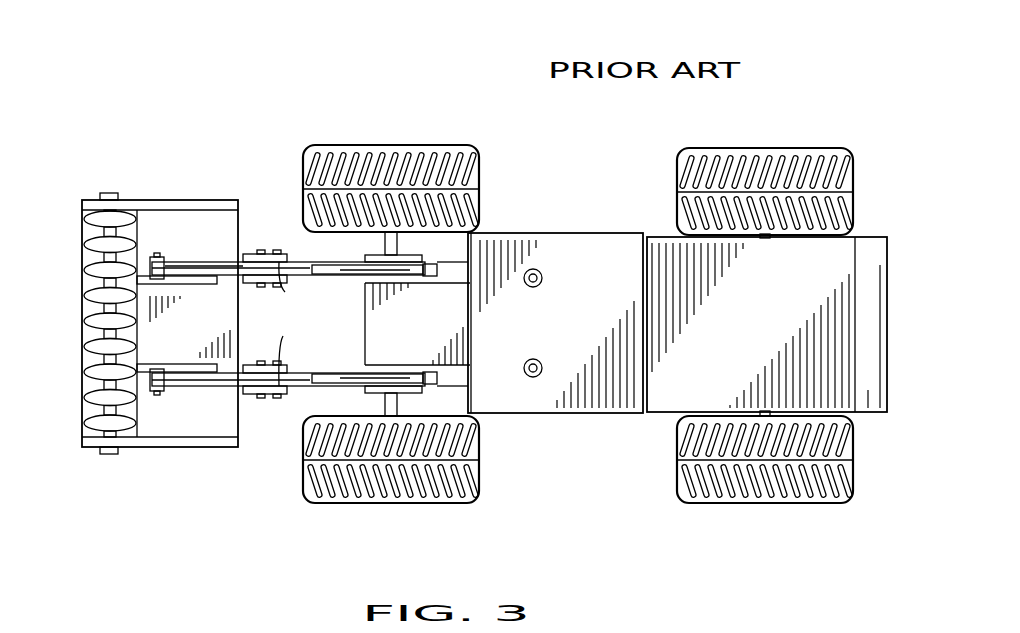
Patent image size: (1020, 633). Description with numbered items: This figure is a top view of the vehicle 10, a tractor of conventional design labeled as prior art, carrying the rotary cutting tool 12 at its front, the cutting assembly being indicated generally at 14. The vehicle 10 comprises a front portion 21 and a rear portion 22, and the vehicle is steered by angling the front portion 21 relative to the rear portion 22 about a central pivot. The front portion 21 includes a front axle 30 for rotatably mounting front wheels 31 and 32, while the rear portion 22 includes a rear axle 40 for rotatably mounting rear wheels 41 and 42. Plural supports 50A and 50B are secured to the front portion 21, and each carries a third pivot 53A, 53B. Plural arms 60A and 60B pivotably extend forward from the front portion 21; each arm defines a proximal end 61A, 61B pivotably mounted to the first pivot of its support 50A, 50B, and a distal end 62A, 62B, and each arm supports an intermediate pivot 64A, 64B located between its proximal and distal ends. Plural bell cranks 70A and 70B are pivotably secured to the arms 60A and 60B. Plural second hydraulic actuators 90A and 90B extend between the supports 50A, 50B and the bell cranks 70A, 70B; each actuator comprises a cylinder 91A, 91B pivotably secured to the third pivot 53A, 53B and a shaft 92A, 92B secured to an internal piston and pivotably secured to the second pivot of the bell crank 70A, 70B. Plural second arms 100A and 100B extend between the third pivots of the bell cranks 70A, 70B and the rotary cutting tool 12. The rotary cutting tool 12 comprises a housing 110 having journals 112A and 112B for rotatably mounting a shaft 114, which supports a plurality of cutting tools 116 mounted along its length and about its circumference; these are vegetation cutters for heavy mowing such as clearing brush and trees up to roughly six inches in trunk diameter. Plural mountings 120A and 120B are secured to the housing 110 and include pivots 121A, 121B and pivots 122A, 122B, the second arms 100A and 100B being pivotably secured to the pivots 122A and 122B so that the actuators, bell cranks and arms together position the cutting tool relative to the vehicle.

The vehicle 10 is at (824, 114).
The rotary cutting tool 12 is at (84, 394).
The implement attachment 14 is at (150, 93).
The front portion 21 is at (478, 446).
The rear portion 22 is at (641, 416).
The front axle 30 is at (350, 377).
The front wheel 31 is at (448, 498).
The front wheel 32 is at (390, 268).
The rear axle 40 is at (757, 418).
The rear wheel 41 is at (800, 495).
The rear wheel 42 is at (768, 165).
The support 50A is at (440, 395).
The support 50B is at (470, 260).
The third pivot 53A is at (445, 384).
The third pivot 53B is at (440, 263).
The arm 60A is at (350, 386).
The arm 60B is at (367, 267).
The proximal end 61A is at (412, 372).
The proximal end 61B is at (400, 272).
The distal end 62A is at (135, 368).
The distal end 62B is at (115, 287).
The pivot 64A is at (300, 265).
The pivot 64B is at (330, 265).
The bell crank 70A is at (240, 386).
The bell crank 70B is at (270, 254).
The second hydraulic actuator 90A is at (320, 386).
The second hydraulic actuator 90B is at (405, 270).
The cylinder 91A is at (387, 447).
The cylinder 91B is at (423, 265).
The shaft 92A is at (300, 388).
The shaft 92B is at (312, 268).
The second arm 100A is at (250, 393).
The second arm 100B is at (247, 253).
The housing 110 is at (85, 412).
The journal 112A is at (100, 453).
The journal 112B is at (103, 195).
The shaft 114 is at (108, 242).
The cutting tools 116 is at (103, 232).
The mounting 120A is at (309, 358).
The mounting 120B is at (308, 288).
The pivot 121A is at (152, 390).
The pivot 121B is at (157, 258).
The pivot 122A is at (150, 362).
The pivot 122B is at (150, 277).